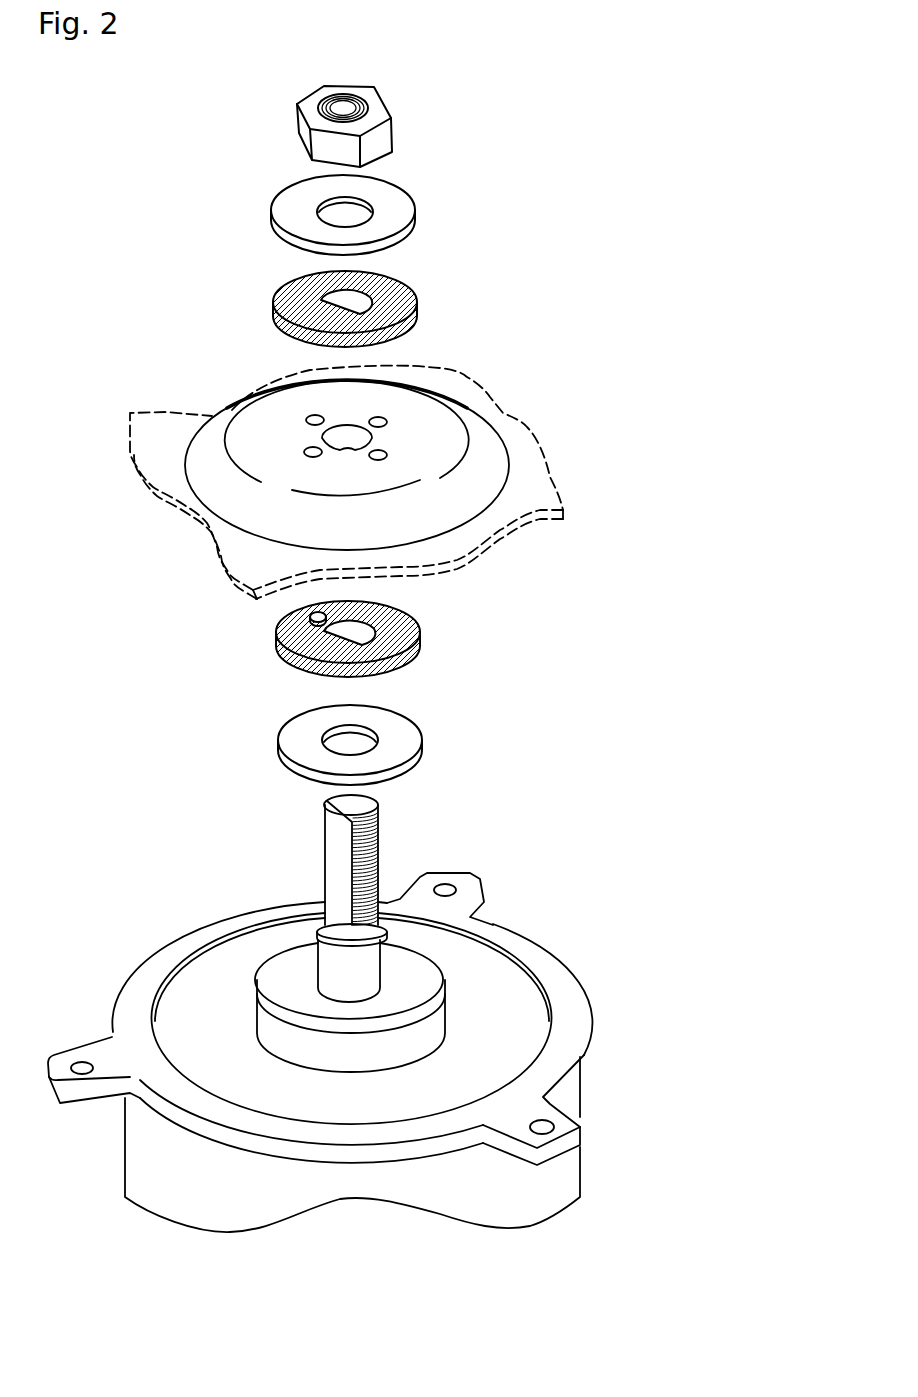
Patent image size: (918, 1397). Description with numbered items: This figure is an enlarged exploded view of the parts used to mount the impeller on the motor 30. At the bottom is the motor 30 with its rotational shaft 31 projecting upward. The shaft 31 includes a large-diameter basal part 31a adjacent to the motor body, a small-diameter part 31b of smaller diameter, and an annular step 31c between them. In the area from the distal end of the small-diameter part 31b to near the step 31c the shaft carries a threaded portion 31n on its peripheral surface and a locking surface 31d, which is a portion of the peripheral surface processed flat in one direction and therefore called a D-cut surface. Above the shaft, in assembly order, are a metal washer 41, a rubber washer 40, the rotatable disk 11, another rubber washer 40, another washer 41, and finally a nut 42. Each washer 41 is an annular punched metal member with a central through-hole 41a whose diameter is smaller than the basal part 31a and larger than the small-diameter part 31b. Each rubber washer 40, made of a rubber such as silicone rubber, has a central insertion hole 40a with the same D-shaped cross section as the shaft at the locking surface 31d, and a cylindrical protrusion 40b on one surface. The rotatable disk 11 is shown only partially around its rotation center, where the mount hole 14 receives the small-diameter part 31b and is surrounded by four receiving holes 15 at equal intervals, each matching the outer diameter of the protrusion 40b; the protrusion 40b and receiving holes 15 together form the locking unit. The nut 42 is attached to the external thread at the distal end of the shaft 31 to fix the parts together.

The rotatable disk 11 is at (487, 400).
The mount hole 14 is at (437, 390).
The receiving holes 15 is at (352, 417).
The motor 30 is at (187, 935).
The rotational shaft 31 is at (580, 855).
The large-diameter basal part 31a is at (419, 965).
The small-diameter part 31b is at (419, 864).
The annular step 31c is at (318, 927).
The locking surface 31d is at (335, 853).
The threaded portion 31n is at (380, 832).
The rubber washer 40 is at (412, 285).
The insertion hole 40a is at (352, 294).
The protrusion 40b is at (321, 616).
The washer 41 is at (410, 193).
The central through-hole 41a is at (346, 205).
The nut 42 is at (388, 104).